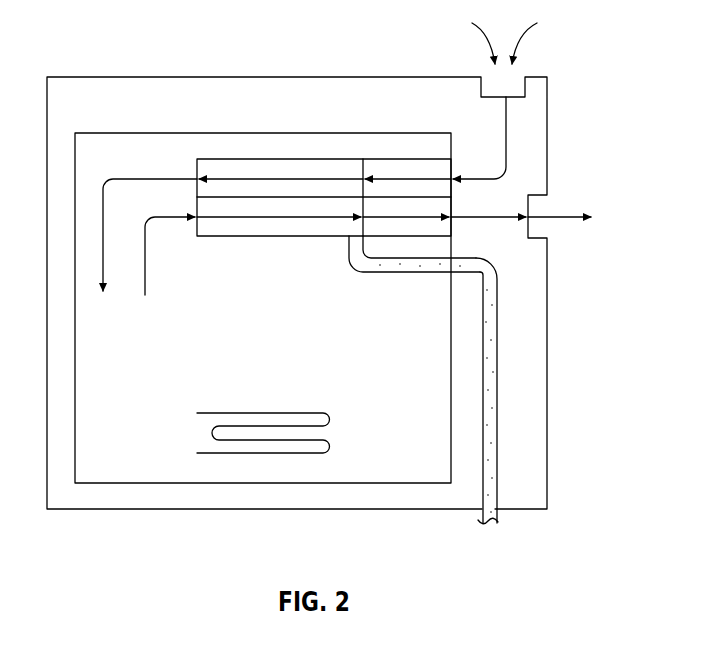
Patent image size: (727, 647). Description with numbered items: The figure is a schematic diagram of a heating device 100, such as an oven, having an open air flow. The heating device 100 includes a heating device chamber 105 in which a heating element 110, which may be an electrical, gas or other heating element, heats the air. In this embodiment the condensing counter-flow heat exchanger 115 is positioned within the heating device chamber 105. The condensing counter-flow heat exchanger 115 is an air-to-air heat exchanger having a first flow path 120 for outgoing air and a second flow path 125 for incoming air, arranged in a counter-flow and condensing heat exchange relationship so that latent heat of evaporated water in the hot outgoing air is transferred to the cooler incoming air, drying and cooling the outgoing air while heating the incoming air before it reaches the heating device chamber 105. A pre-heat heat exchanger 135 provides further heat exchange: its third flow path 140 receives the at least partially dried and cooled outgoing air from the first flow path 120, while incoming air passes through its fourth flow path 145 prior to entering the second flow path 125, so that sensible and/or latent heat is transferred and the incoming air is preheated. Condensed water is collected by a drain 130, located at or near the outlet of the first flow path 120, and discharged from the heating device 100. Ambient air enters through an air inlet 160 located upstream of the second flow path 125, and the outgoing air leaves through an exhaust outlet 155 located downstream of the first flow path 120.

The heating device 100 is at (115, 48).
The heating device chamber 105 is at (177, 462).
The heating element 110 is at (262, 412).
The condensing counter-flow heat exchanger 115 is at (196, 163).
The first flow path 120 is at (275, 237).
The second flow path 125 is at (284, 158).
The drain 130 is at (497, 405).
The pre-heat heat exchanger 135 is at (454, 166).
The third flow path 140 is at (408, 238).
The fourth flow path 145 is at (405, 158).
The exhaust outlet 155 is at (533, 237).
The air inlet 160 is at (486, 87).